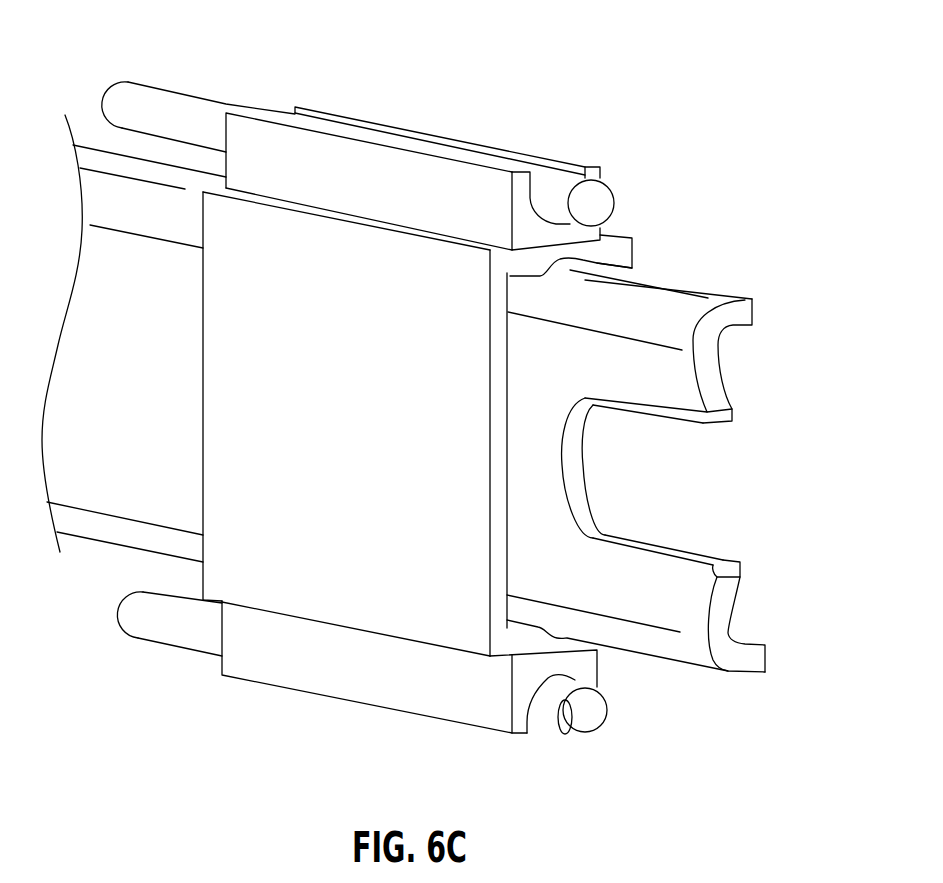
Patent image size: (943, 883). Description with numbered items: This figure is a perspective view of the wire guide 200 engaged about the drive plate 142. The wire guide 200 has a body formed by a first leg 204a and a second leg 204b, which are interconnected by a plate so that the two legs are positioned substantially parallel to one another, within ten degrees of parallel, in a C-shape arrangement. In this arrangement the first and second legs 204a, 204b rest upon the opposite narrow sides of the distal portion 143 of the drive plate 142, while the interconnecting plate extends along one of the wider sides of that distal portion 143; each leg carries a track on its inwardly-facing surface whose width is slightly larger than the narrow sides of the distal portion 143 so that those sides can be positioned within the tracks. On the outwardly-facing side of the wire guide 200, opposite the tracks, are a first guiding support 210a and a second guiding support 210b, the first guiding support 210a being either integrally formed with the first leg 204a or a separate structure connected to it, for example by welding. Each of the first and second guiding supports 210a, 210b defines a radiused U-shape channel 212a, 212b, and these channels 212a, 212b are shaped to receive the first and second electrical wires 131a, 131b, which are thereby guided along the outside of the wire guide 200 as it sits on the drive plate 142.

The drive plate 142 is at (122, 163).
The distal portion of the drive plate 143 is at (752, 299).
The first electrical wire 131a is at (207, 108).
The second electrical wire 131b is at (185, 638).
The wire guide 200 is at (198, 424).
The first leg 204a is at (270, 230).
The second leg 204b is at (442, 630).
The first guiding support 210a is at (395, 122).
The second guiding support 210b is at (330, 668).
The U-shape channel 212a is at (557, 222).
The U-shape channel 212b is at (561, 712).